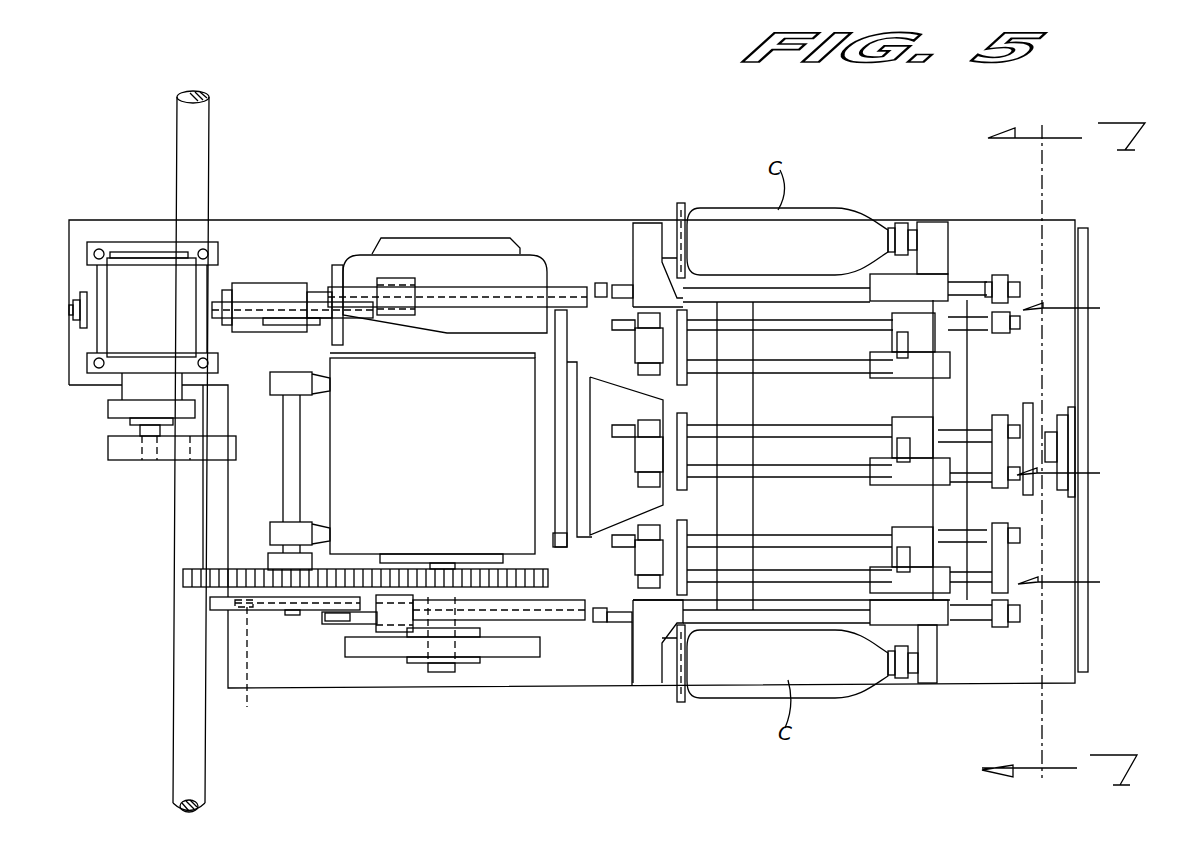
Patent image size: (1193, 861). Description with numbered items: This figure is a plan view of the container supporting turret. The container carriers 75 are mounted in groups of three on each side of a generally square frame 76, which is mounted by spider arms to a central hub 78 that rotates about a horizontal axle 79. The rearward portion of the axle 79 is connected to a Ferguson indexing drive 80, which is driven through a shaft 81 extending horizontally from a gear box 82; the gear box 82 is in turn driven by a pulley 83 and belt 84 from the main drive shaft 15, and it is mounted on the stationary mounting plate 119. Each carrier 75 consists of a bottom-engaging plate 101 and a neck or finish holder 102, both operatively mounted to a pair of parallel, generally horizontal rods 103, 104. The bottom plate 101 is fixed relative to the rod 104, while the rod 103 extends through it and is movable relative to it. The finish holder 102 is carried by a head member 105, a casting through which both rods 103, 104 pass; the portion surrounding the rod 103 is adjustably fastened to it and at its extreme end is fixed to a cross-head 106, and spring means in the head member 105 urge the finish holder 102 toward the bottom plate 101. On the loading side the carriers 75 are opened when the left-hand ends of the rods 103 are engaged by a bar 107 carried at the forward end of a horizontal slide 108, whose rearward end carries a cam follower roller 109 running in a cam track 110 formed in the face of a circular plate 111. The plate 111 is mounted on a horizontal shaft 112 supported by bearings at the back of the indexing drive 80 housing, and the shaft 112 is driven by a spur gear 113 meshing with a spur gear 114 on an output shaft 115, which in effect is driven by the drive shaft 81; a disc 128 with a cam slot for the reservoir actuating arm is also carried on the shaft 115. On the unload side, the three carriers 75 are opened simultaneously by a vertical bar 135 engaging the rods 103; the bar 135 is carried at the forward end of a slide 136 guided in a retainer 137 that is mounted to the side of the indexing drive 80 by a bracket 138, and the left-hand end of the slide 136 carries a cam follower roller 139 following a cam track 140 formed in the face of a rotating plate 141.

The main drive shaft 15 is at (185, 138).
The gear box 82 is at (160, 321).
The belt 84 is at (118, 448).
The pulley 83 is at (123, 462).
The horizontal shaft 112 is at (290, 490).
The Ferguson indexing drive 80 is at (455, 489).
The retainer 137 is at (475, 293).
The cam follower roller 139 is at (342, 308).
The slide 136 is at (353, 290).
The shaft 81 is at (315, 293).
The cam track 140 is at (245, 307).
The plate 141 is at (227, 307).
The vertical bar 135 is at (602, 283).
The bracket 138 is at (567, 330).
The spur gear 113 is at (183, 577).
The spur gear 114 is at (508, 577).
The circular plate 111 is at (210, 603).
The cam track 110 is at (241, 668).
The cam follower roller 109 is at (337, 613).
The horizontal slide 108 is at (362, 618).
The bar 107 is at (598, 622).
The disc 128 is at (512, 647).
The output shaft 115 is at (443, 672).
The square frame 76 is at (738, 388).
The bottom-engaging plate 101 is at (700, 172).
The rod 103 is at (620, 285).
The rod 104 is at (962, 290).
The head member 105 is at (923, 235).
The finish holder 102 is at (903, 228).
The cross-head 106 is at (1000, 285).
The carrier 75 is at (1088, 438).
The central hub 78 is at (1013, 400).
The horizontal axle 79 is at (1045, 448).
The mounting plate 119 is at (1055, 675).